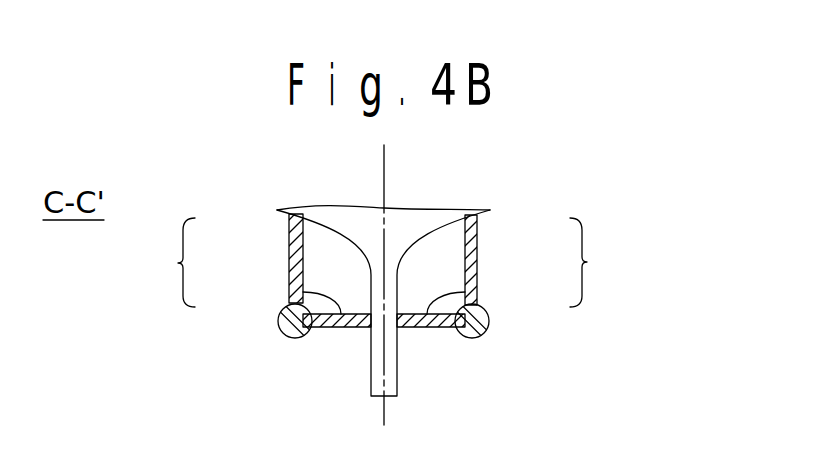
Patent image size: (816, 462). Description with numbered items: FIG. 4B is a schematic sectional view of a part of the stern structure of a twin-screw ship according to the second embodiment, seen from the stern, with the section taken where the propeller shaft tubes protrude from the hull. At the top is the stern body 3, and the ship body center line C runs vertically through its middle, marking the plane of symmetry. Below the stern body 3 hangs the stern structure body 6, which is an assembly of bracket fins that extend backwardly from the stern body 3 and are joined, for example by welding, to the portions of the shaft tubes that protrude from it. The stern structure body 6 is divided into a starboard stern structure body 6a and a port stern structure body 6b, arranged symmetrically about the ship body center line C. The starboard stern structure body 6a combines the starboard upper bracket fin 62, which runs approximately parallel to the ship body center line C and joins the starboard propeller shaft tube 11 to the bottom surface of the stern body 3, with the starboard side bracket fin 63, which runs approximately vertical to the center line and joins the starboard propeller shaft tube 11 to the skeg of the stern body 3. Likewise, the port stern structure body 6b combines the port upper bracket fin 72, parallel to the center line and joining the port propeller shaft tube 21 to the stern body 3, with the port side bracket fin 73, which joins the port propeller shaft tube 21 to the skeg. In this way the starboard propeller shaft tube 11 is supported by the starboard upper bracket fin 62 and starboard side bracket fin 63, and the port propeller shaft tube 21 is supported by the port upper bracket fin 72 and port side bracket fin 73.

The stern body 3 is at (420, 215).
The stern structure body 6 is at (548, 342).
The starboard stern structure body 6a is at (592, 262).
The port stern structure body 6b is at (173, 262).
The starboard upper bracket fin 62 is at (478, 258).
The starboard side bracket fin 63 is at (438, 291).
The port upper bracket fin 72 is at (288, 258).
The port side bracket fin 73 is at (330, 291).
The starboard propeller shaft tube 11 is at (472, 338).
The port propeller shaft tube 21 is at (292, 338).
The ship body center line C is at (384, 172).